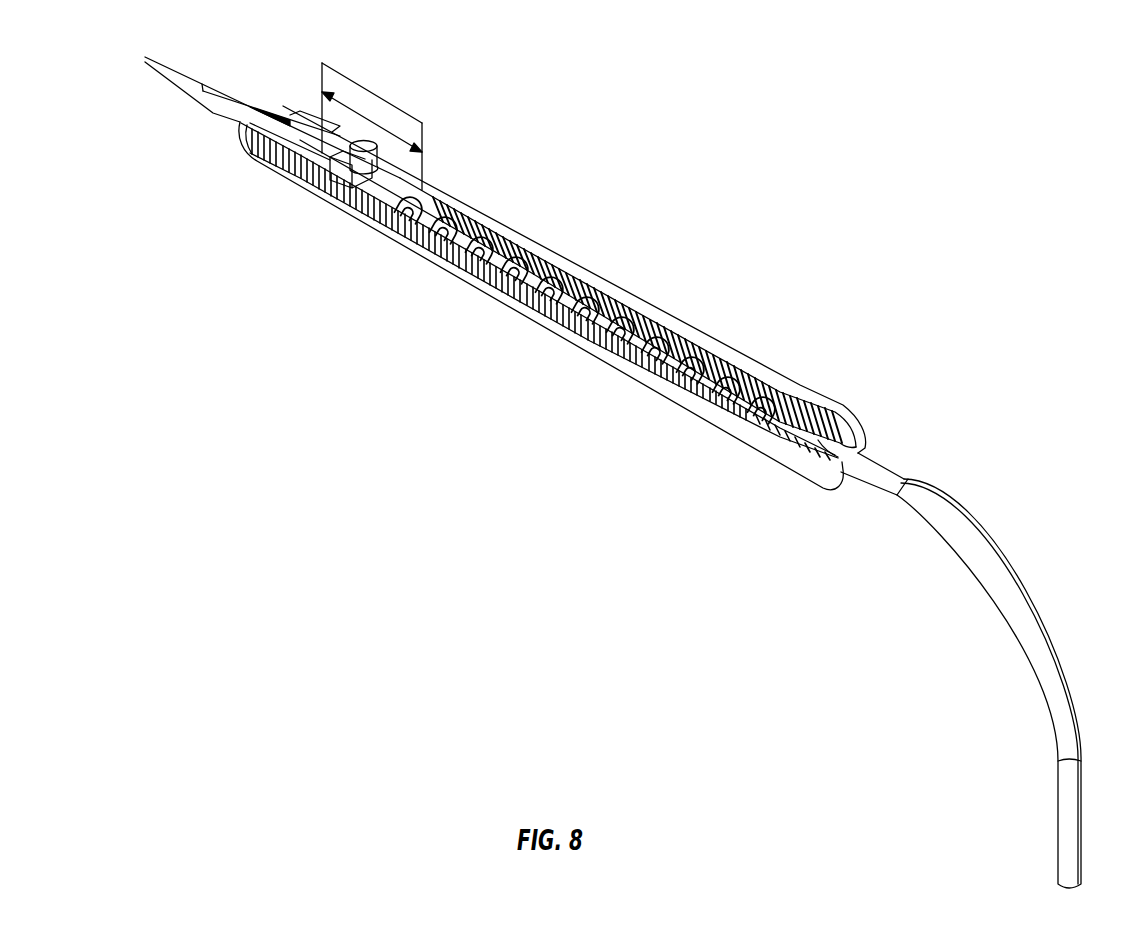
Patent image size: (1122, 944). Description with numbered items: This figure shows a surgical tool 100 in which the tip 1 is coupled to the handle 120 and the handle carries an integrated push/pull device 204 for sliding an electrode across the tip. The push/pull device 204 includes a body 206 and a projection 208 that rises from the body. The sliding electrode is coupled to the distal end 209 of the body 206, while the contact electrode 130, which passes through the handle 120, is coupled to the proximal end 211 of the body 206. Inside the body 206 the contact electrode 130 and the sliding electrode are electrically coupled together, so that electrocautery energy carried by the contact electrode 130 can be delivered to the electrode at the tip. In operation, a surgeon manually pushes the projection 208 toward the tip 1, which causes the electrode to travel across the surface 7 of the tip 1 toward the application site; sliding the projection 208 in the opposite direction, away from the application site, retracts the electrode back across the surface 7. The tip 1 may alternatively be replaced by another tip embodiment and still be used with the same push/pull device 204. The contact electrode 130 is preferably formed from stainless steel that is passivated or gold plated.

The catheter assembly 100 is at (785, 100).
The tip 1 is at (146, 56).
The surface 7 is at (215, 116).
The handle 120 is at (567, 330).
The contact electrode 130 is at (522, 251).
The push/pull device 204 is at (347, 88).
The body 206 is at (385, 196).
The projection 208 is at (364, 139).
The distal end 209 is at (320, 76).
The proximal end 211 is at (422, 137).